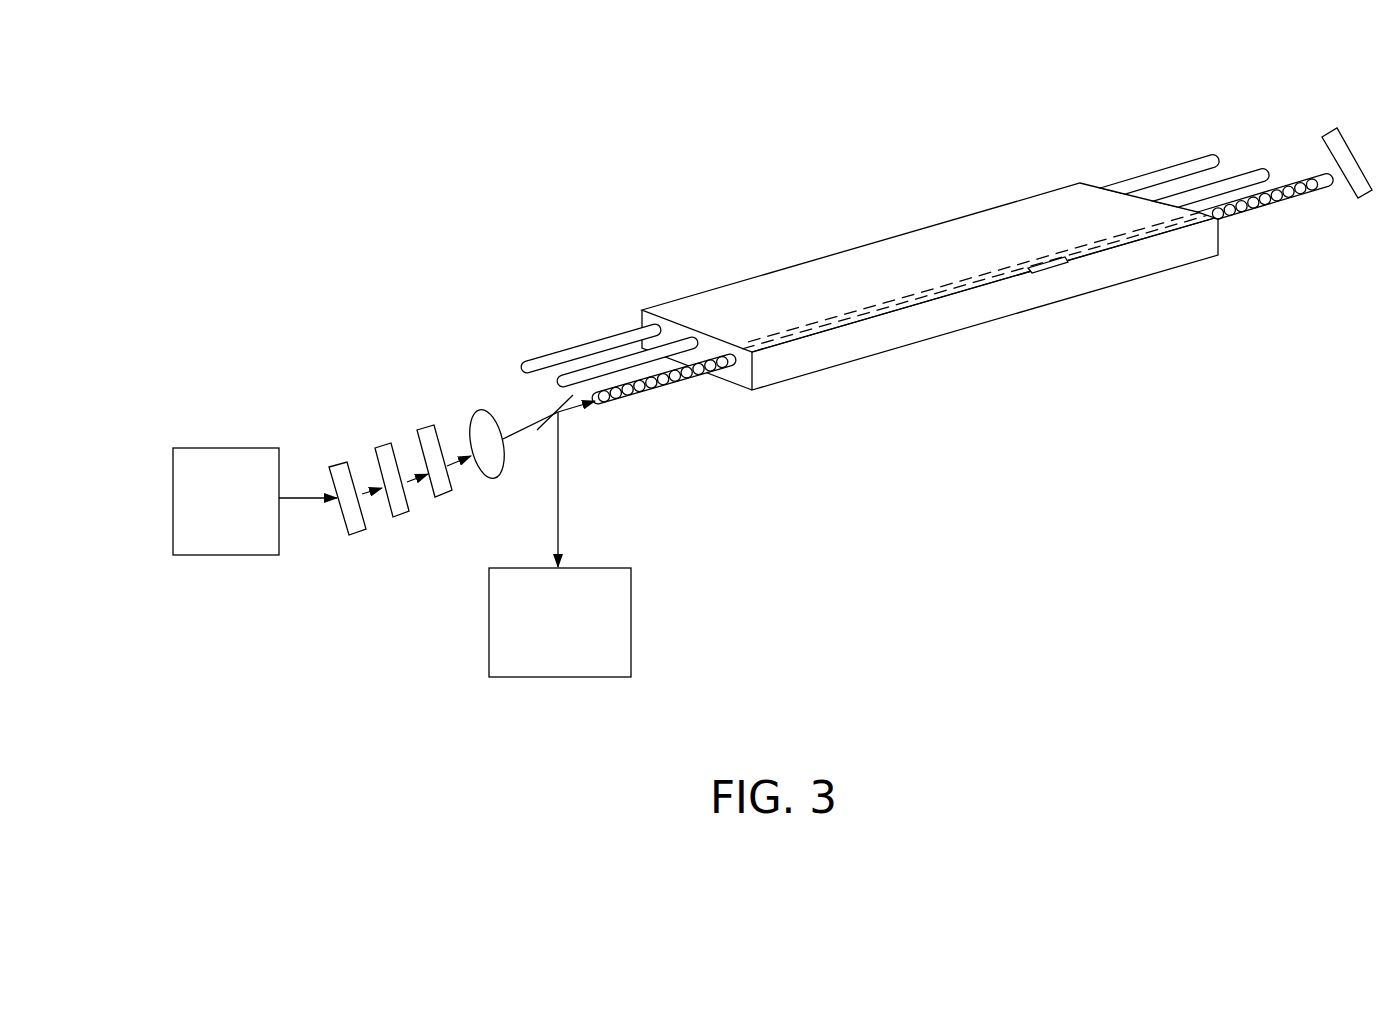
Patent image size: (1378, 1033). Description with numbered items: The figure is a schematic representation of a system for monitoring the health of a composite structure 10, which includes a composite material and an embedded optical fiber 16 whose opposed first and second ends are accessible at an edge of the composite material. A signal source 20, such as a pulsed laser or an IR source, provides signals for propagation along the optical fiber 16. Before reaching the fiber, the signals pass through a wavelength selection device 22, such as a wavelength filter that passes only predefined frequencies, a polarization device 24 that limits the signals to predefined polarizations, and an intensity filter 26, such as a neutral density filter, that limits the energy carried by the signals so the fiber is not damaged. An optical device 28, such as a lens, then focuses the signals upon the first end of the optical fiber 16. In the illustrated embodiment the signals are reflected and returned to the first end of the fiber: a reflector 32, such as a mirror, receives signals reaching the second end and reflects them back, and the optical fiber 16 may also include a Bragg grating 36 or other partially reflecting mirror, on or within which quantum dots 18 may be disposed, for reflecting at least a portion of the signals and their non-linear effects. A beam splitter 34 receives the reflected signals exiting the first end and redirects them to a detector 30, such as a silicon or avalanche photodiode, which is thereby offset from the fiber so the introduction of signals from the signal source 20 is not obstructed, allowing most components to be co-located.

The composite structure 10 is at (925, 193).
The optical fiber 16 is at (545, 356).
The quantum dots 18 is at (668, 377).
The signal source 20 is at (242, 447).
The wavelength selection device 22 is at (342, 467).
The polarization device 24 is at (383, 445).
The intensity filter 26 is at (437, 497).
The optical device 28 is at (476, 410).
The detector 30 is at (587, 568).
The reflector 32 is at (1362, 200).
The beam splitter 34 is at (550, 418).
The Bragg grating 36 is at (1050, 265).